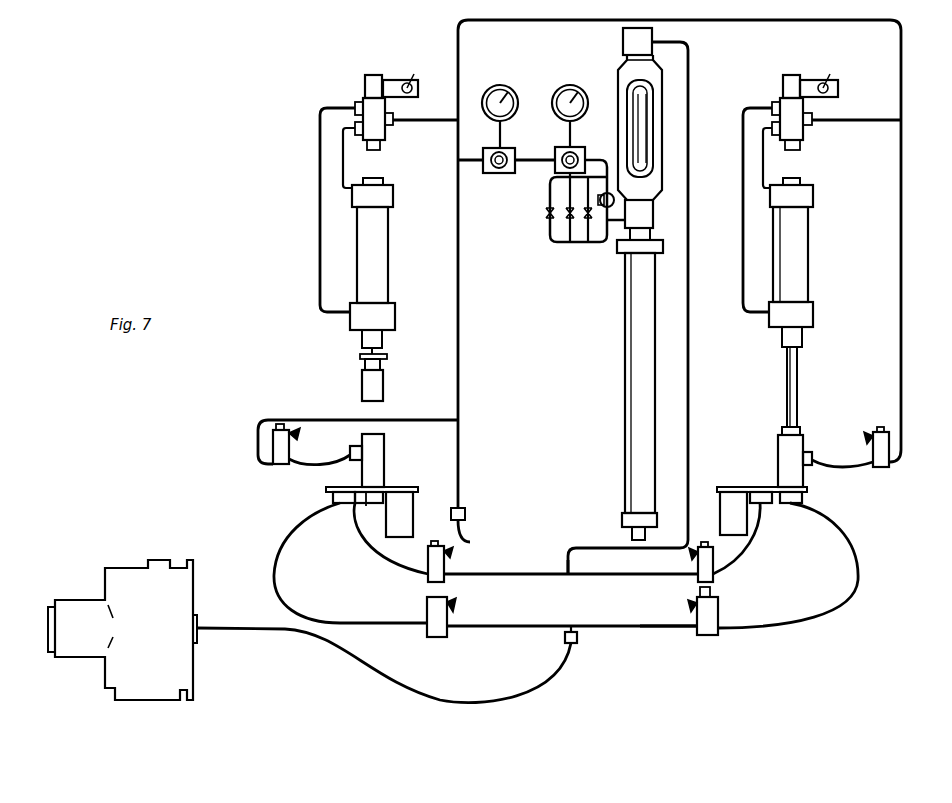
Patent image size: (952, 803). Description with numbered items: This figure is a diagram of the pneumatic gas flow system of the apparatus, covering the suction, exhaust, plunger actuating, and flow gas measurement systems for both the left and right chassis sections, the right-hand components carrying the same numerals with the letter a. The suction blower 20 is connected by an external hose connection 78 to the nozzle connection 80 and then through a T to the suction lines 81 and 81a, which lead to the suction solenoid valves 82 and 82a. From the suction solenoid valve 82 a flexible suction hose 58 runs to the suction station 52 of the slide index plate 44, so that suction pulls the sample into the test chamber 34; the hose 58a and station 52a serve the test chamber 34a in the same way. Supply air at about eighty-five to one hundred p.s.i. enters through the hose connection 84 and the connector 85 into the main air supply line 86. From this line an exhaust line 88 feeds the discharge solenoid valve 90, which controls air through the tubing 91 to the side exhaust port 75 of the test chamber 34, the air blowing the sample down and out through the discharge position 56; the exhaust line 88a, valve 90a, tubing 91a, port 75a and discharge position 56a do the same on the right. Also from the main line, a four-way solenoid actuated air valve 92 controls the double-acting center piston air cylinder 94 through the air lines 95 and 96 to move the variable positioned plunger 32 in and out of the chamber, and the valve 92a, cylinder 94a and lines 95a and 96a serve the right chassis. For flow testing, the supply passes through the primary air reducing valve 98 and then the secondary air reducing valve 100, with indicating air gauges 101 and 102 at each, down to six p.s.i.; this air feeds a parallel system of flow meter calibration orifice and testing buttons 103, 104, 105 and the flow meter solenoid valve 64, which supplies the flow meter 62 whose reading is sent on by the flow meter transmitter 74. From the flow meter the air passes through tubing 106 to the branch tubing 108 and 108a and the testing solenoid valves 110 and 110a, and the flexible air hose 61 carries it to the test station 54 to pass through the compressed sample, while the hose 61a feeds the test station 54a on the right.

The suction blower 20 is at (193, 572).
The variable positioned plunger 32 is at (384, 385).
The test chamber 34 is at (384, 442).
The slide index plate 44 is at (390, 482).
The suction station 52 is at (333, 498).
The test station 54 is at (369, 509).
The discharge position 56 is at (413, 505).
The suction hose 58 is at (277, 562).
The flexible air hose 61 is at (377, 555).
The flow meter 62 is at (622, 75).
The flow meter solenoid valve 64 is at (598, 243).
The flow meter transmitter 74 is at (624, 355).
The side exhaust port 75 is at (350, 450).
The external hose connection 78 is at (520, 704).
The nozzle connection 80 is at (578, 640).
The suction line 81 is at (503, 625).
The suction solenoid valve 82 is at (437, 637).
The hose connection 84 is at (468, 535).
The connector 85 is at (460, 507).
The main air supply line 86 is at (460, 386).
The exhaust line 88 is at (327, 418).
The discharge solenoid valve 90 is at (273, 440).
The tubing 91 is at (312, 465).
The four-way solenoid actuated air valve 92 is at (385, 135).
The double-acting center piston air cylinder 94 is at (389, 231).
The air line 95 is at (345, 162).
The air line 96 is at (318, 187).
The primary air reducing valve 98 is at (486, 174).
The secondary air reducing valve 100 is at (578, 147).
The indicating air gauge 101 is at (502, 84).
The indicating air gauge 102 is at (564, 84).
The flow meter calibration orifice and testing button 103 is at (546, 212).
The flow meter calibration orifice and testing button 104 is at (568, 218).
The flow meter calibration orifice and testing button 105 is at (578, 243).
The tubing 106 is at (690, 368).
The branch tubing 108 is at (527, 572).
The branch tubing 108a is at (588, 575).
The testing solenoid valve 110 is at (445, 560).
The suction line 81a is at (658, 625).
The test chamber 34a is at (778, 442).
The suction station 52a is at (803, 498).
The test station 54a is at (760, 492).
The discharge position 56a is at (735, 498).
The suction hose 58a is at (858, 570).
The flexible air hose 61a is at (765, 540).
The side exhaust port 75a is at (810, 466).
The suction solenoid valve 82a is at (710, 637).
The exhaust line 88a is at (900, 350).
The discharge solenoid valve 90a is at (880, 467).
The tubing 91a is at (838, 462).
The four-way solenoid actuated air valve 92a is at (805, 136).
The double-acting center piston air cylinder 94a is at (810, 245).
The air line 95a is at (765, 162).
The air line 96a is at (742, 186).
The testing solenoid valve 110a is at (715, 578).